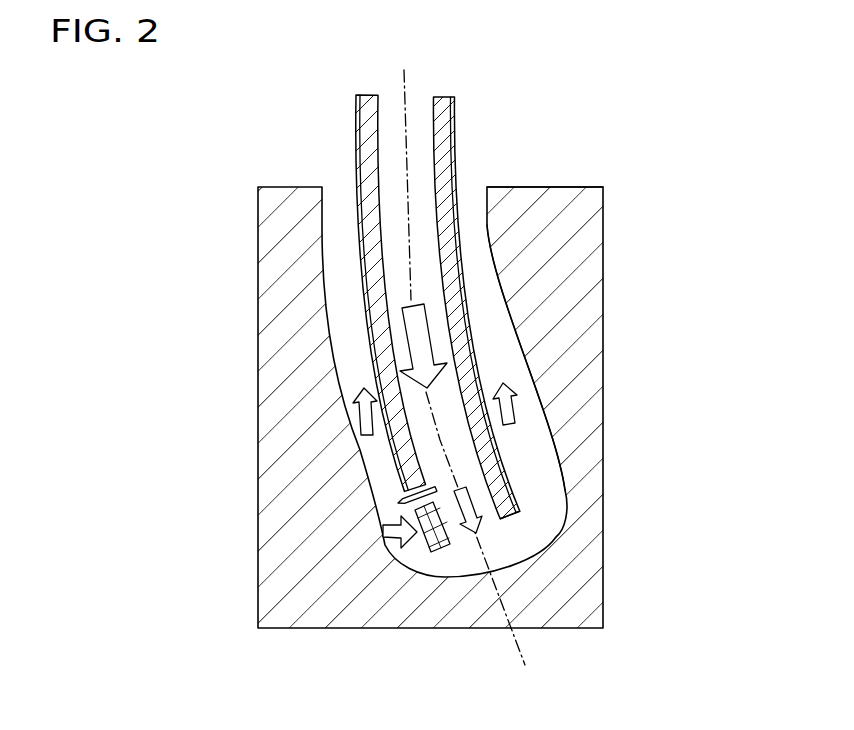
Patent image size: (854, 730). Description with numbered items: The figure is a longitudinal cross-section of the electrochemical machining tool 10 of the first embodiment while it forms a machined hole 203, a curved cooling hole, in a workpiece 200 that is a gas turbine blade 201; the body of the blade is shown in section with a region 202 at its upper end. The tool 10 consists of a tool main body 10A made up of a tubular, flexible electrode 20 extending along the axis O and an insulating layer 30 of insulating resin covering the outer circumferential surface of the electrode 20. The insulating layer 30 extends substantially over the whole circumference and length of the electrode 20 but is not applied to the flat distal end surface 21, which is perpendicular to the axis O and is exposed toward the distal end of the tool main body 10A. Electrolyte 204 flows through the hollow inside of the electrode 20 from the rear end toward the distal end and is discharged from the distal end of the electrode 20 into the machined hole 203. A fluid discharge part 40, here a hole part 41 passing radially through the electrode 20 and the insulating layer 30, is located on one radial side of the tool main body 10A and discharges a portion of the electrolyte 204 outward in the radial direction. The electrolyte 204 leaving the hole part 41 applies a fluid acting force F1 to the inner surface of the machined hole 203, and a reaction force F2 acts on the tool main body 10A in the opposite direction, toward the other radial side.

The electrochemical machining tool 10 is at (408, 315).
The tool main body 10A is at (472, 146).
The electrode 20 is at (362, 121).
The insulating layer 30 is at (358, 157).
The workpiece 200 is at (427, 407).
The turbine blade 201 is at (583, 331).
The upper end surface 202 is at (549, 187).
The machined hole 203 is at (490, 252).
The electrolyte 204 is at (458, 446).
The axis O is at (405, 256).
The distal end surface 21 is at (531, 534).
The fluid discharge part 40 is at (372, 494).
The hole part 41 is at (383, 495).
The fluid acting force F1 is at (430, 548).
The reaction force F2 is at (383, 533).